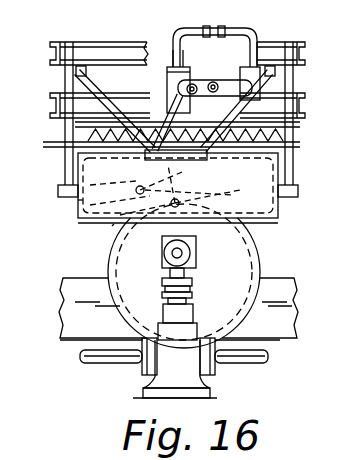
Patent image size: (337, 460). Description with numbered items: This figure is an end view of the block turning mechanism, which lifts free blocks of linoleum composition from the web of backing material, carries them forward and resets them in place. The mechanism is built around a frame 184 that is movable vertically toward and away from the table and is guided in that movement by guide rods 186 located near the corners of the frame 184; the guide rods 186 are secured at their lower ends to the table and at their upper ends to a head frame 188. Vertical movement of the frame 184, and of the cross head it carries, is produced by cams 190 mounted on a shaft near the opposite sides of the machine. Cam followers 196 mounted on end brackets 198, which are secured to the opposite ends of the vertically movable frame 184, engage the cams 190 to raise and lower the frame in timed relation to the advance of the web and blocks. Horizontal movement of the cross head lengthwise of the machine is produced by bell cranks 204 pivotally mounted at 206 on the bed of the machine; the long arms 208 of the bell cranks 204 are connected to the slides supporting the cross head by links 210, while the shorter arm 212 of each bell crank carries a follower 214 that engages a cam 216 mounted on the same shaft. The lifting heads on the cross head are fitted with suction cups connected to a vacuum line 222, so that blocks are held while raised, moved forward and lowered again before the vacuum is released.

The frame 184 is at (303, 100).
The guide rods 186 is at (67, 166).
The head frame 188 is at (105, 40).
The cams 190 is at (202, 260).
The cam followers 196 is at (202, 257).
The end brackets 198 is at (80, 205).
The bell cranks 204 is at (142, 177).
The pivot 206 is at (113, 226).
The long arms 208 is at (166, 110).
The links 210 is at (207, 78).
The shorter arm 212 is at (185, 182).
The follower 214 is at (217, 198).
The cam 216 is at (260, 243).
The vacuum line 222 is at (198, 31).